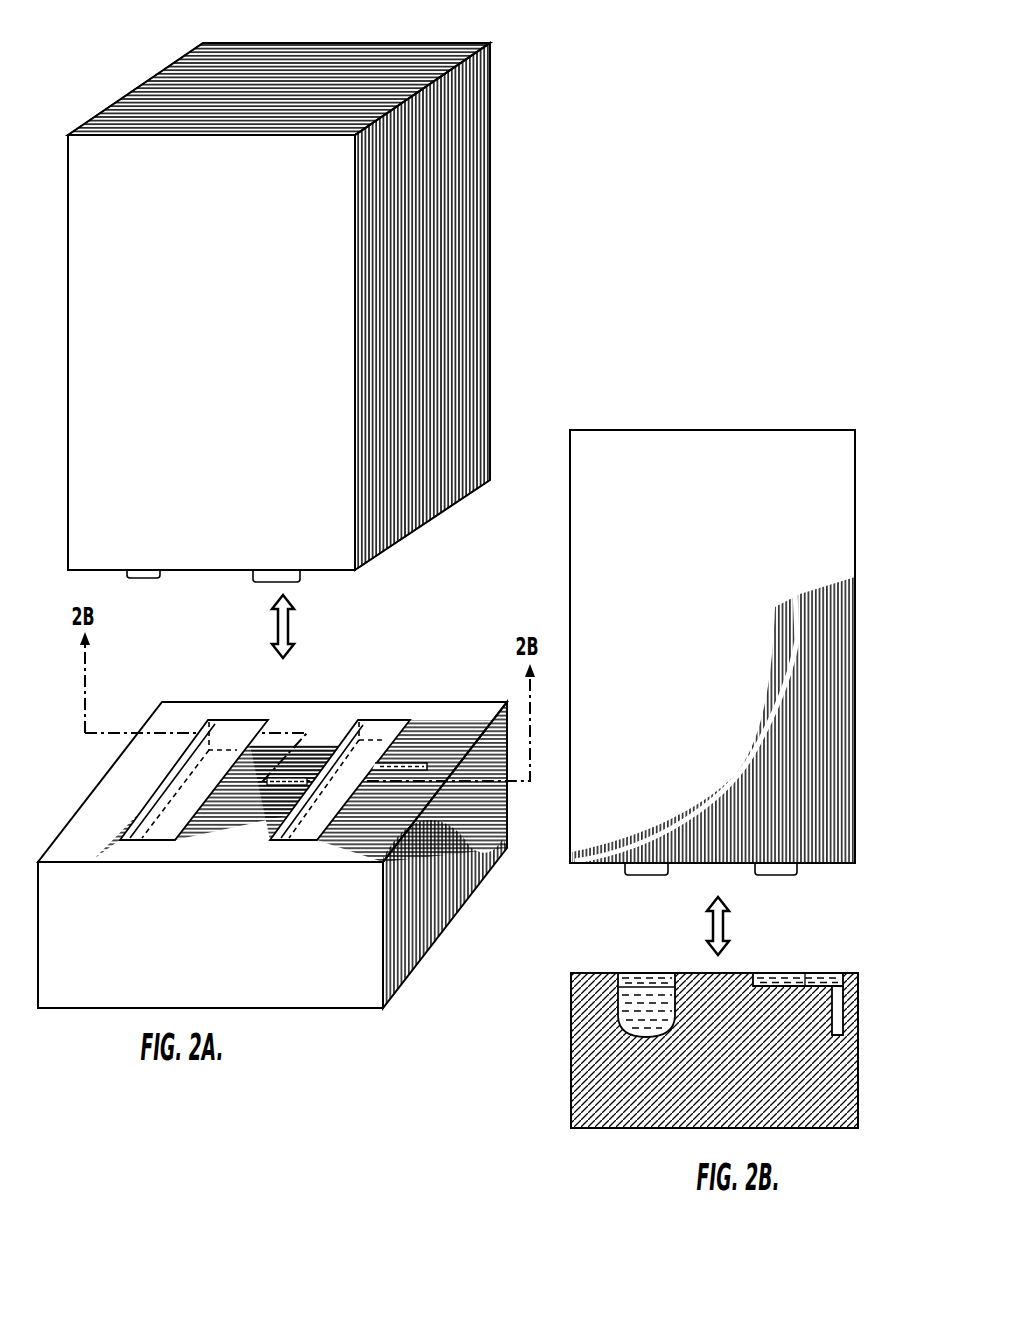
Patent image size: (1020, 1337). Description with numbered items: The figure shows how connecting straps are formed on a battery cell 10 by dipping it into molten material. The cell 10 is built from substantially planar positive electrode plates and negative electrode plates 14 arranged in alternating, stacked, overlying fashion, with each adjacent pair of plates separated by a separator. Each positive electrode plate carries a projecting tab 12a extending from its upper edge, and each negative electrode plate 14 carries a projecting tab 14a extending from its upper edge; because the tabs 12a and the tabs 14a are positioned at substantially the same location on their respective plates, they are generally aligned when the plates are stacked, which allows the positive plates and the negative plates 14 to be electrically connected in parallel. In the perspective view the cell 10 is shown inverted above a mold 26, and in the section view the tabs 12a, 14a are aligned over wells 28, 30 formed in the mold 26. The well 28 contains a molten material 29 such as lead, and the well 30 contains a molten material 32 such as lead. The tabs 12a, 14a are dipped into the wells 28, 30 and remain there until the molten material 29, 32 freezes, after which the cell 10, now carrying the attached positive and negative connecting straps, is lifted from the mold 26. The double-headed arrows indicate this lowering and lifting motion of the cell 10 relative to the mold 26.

In FIG. 2A, the battery cell 10 is at (506, 269).
In FIG. 2A, the projecting tab 12a is at (146, 579).
In FIG. 2B, the projecting tab 12a is at (645, 877).
In FIG. 2B, the negative electrode plate 14 is at (722, 520).
In FIG. 2A, the projecting tab 14a is at (289, 579).
In FIG. 2B, the projecting tab 14a is at (778, 877).
In FIG. 2A, the mold 26 is at (413, 947).
In FIG. 2B, the mold 26 is at (807, 1112).
In FIG. 2A, the well 28 is at (240, 716).
In FIG. 2B, the well 28 is at (618, 1015).
In FIG. 2B, the molten material 29 is at (640, 972).
In FIG. 2A, the well 30 is at (370, 716).
In FIG. 2B, the well 30 is at (844, 1003).
In FIG. 2A, the molten material 32 is at (399, 766).
In FIG. 2B, the molten material 32 is at (773, 972).